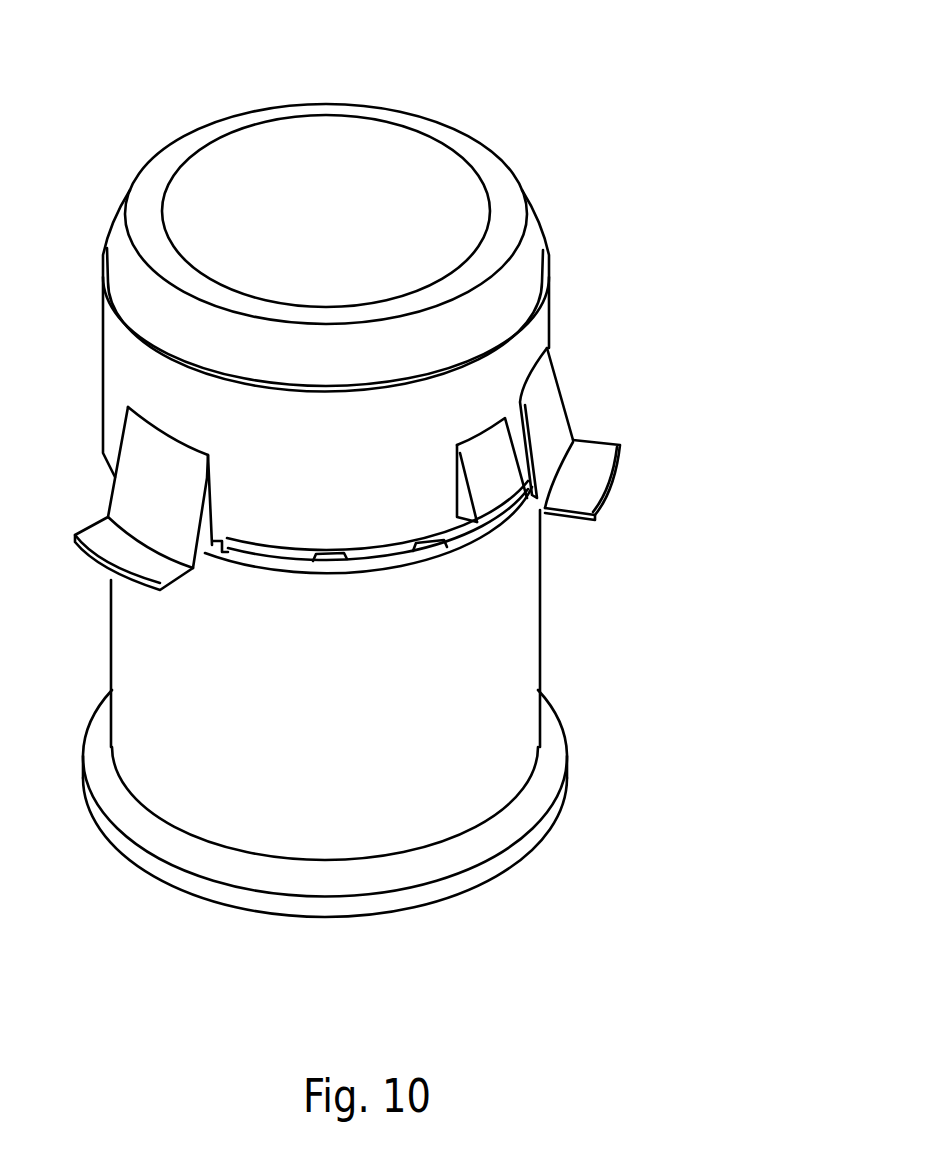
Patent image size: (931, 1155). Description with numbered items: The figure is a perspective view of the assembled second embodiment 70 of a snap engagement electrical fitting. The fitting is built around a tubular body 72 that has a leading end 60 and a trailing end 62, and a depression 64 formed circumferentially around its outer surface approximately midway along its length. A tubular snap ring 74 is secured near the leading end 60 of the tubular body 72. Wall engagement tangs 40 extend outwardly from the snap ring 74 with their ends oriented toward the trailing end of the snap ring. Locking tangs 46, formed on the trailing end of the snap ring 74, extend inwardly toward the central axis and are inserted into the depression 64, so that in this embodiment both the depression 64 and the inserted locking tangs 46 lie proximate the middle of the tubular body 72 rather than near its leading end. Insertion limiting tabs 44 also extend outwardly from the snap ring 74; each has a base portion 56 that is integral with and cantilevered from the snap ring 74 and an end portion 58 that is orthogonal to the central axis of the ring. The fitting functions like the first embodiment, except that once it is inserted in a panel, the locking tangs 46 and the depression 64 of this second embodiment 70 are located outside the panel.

The second embodiment of the snap engagement electrical fitting 70 is at (640, 318).
The leading end 60 is at (317, 104).
The snap ring 74 is at (343, 480).
The tubular body 72 is at (347, 731).
The trailing end 62 is at (330, 918).
The depression 64 is at (425, 553).
The locking tangs 46 is at (382, 557).
The insertion limiting tabs 44 is at (171, 501).
The wall engagement tangs 40 is at (509, 487).
The base portion 56 is at (552, 425).
The end portion 58 is at (583, 487).